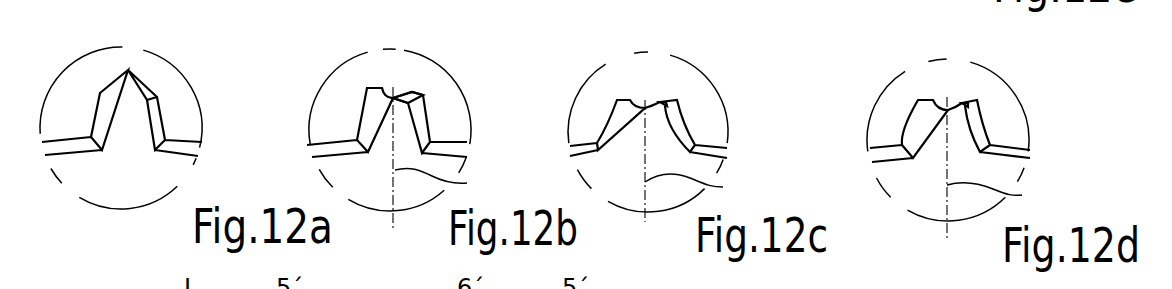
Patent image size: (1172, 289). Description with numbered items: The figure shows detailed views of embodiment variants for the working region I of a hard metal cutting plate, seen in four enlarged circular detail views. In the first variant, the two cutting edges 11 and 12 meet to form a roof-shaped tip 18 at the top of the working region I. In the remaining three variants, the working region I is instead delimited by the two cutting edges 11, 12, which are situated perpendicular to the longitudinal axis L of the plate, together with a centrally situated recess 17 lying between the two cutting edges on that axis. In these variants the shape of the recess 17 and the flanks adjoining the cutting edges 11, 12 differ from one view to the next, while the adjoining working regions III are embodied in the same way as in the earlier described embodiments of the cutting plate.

In FIG. 12A, the cutting edge 11 is at (106, 86).
In FIG. 12B, the cutting edge 11 is at (373, 87).
In FIG. 12C, the cutting edge 11 is at (621, 98).
In FIG. 12D, the cutting edge 11 is at (920, 97).
In FIG. 12A, the cutting edge 12 is at (152, 87).
In FIG. 12B, the cutting edge 12 is at (418, 82).
In FIG. 12C, the cutting edge 12 is at (672, 100).
In FIG. 12D, the cutting edge 12 is at (967, 100).
In FIG. 12B, the recess 17 is at (398, 90).
In FIG. 12C, the recess 17 is at (652, 102).
In FIG. 12D, the recess 17 is at (952, 102).
In FIG. 12A, the roof-shaped tip 18 is at (148, 72).
In FIG. 12A, the working region I is at (92, 3).
In FIG. 12B, the working region I is at (377, 9).
In FIG. 12C, the working region I is at (627, 14).
In FIG. 12D, the working region I is at (905, 23).
In FIG. 12B, the working region III is at (280, 66).
In FIG. 12C, the working region III is at (531, 69).
In FIG. 12D, the working region III is at (815, 76).
In FIG. 12B, the longitudinal axis L is at (442, 183).
In FIG. 12C, the longitudinal axis L is at (696, 188).
In FIG. 12D, the longitudinal axis L is at (996, 194).